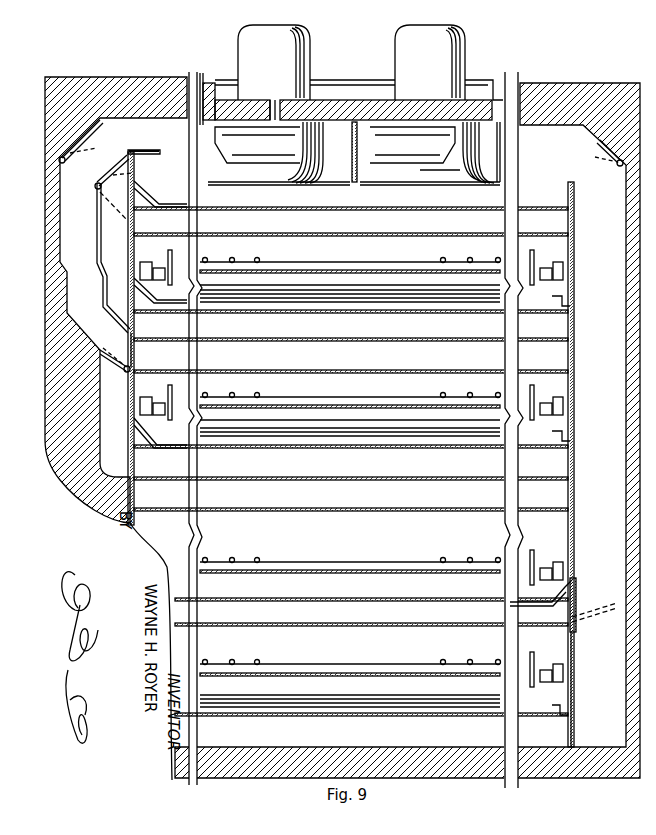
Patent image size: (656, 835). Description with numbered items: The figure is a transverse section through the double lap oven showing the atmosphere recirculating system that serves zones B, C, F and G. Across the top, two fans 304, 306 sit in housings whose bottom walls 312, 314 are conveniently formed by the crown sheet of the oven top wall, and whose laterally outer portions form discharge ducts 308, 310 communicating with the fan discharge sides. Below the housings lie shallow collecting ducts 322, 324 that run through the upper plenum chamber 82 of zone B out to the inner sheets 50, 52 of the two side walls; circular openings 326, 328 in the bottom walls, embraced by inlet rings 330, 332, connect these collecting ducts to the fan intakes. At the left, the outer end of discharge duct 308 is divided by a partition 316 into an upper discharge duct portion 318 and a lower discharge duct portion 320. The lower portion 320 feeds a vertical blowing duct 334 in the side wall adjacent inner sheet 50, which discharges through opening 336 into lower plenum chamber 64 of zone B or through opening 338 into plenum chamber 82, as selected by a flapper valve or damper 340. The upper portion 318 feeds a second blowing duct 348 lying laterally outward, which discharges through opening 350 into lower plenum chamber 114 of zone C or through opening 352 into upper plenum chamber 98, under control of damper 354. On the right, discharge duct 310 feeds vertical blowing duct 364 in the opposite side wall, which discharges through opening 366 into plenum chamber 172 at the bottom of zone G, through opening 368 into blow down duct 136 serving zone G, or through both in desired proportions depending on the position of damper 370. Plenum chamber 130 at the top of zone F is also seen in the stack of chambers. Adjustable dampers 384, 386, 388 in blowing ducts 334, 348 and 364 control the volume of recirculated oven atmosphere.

The inner sheet 50 is at (133, 517).
The inner sheet 52 is at (572, 538).
The plenum chamber 82 is at (338, 226).
The zone B is at (343, 258).
The plenum chamber 64 is at (328, 333).
The plenum chamber 98 is at (328, 361).
The zone C is at (338, 394).
The plenum chamber 114 is at (325, 470).
The plenum chamber 130 is at (328, 500).
The zone F is at (338, 553).
The blow down duct 136 is at (333, 618).
The zone G is at (336, 650).
The plenum chamber 172 is at (330, 738).
The fan 304 is at (335, 147).
The fan 306 is at (492, 147).
The discharge duct 308 is at (187, 148).
The discharge duct 310 is at (552, 150).
The bottom wall 312 is at (208, 183).
The bottom wall 314 is at (498, 187).
The partition 316 is at (142, 148).
The upper discharge duct portion 318 is at (148, 145).
The lower discharge duct portion 320 is at (142, 172).
The collecting duct 322 is at (322, 201).
The collecting duct 324 is at (368, 201).
The circular opening 326 is at (248, 182).
The circular opening 328 is at (421, 189).
The inlet ring 330 is at (313, 173).
The inlet ring 332 is at (477, 180).
The vertical blowing duct 334 is at (103, 251).
The opening 336 is at (127, 313).
The opening 338 is at (136, 220).
The flapper valve or damper 340 is at (113, 202).
The second blowing duct 348 is at (68, 251).
The opening 350 is at (133, 460).
The opening 352 is at (134, 352).
The flapper valve or damper 354 is at (127, 345).
The vertical blowing duct 364 is at (588, 421).
The opening 366 is at (568, 733).
The opening 368 is at (570, 610).
The flapper valve or damper 370 is at (577, 583).
The adjustable damper 384 is at (110, 170).
The adjustable damper 386 is at (105, 123).
The adjustable damper 388 is at (607, 162).